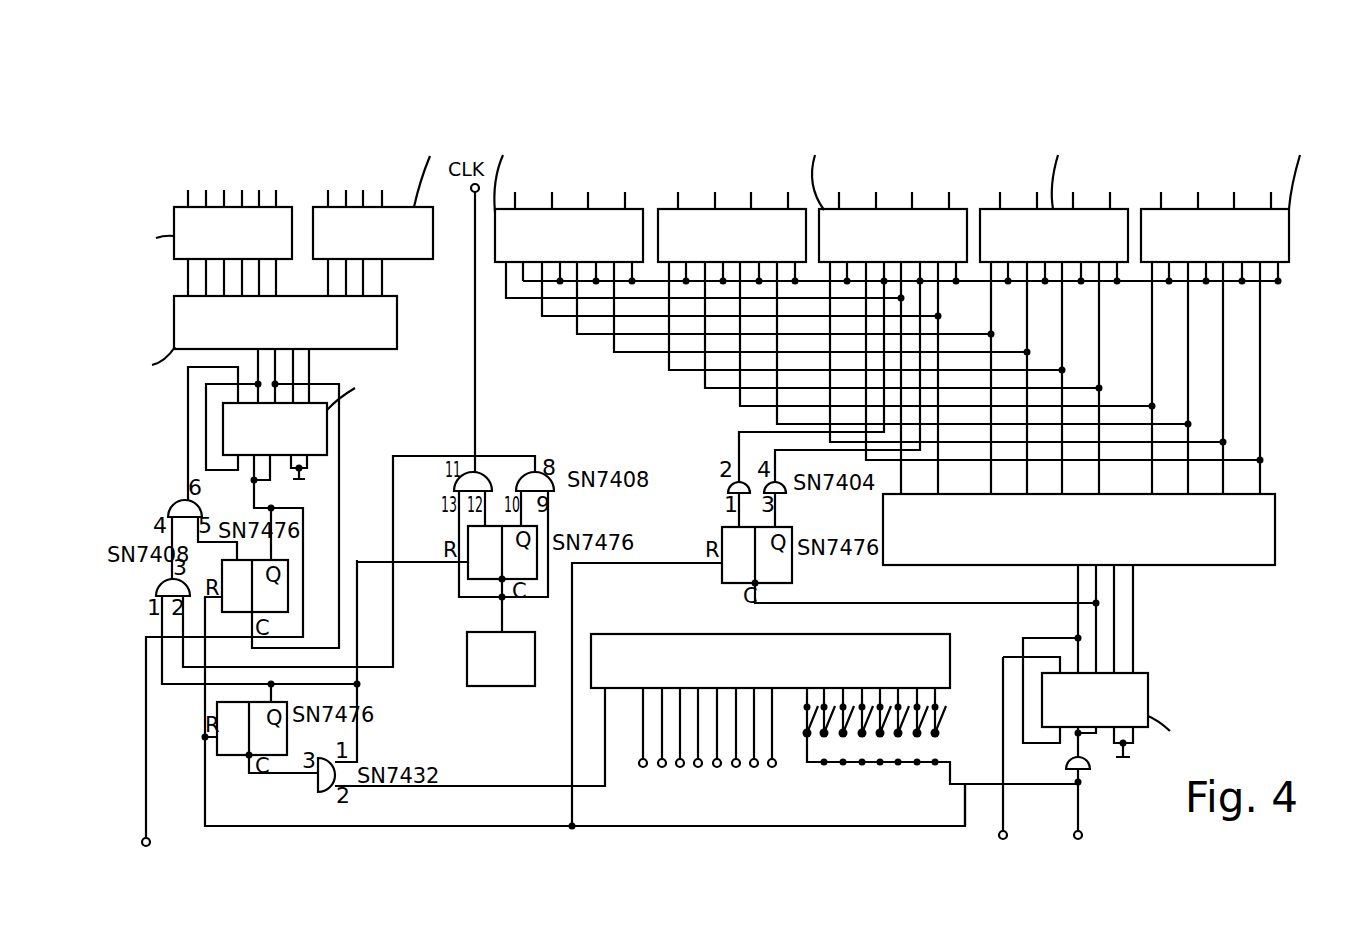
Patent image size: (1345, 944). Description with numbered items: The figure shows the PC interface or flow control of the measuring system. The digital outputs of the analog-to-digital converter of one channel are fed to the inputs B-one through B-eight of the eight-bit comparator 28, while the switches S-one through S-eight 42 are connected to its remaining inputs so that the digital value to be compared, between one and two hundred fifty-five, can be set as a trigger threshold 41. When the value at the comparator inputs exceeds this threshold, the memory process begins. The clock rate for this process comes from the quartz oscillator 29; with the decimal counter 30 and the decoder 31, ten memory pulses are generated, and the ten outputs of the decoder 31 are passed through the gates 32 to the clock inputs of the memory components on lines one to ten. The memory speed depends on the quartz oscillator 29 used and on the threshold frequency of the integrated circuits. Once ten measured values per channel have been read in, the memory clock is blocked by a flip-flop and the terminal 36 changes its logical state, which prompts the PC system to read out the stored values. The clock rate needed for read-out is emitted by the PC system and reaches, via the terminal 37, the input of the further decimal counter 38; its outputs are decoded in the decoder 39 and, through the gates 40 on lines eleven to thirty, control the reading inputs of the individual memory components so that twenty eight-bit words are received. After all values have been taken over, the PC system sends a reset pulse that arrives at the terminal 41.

The 8-bit comparator 28 is at (732, 652).
The quartz oscillator 29 is at (490, 700).
The decimal counter 30 is at (320, 426).
The decoder 31 is at (388, 338).
The gates 32 is at (289, 207).
The terminal 36 is at (161, 847).
The terminal 37 is at (1017, 843).
The further decimal counter 38 is at (1148, 690).
The decoder 39 is at (1183, 549).
The gates 40 is at (662, 211).
The trigger threshold 41 is at (1090, 843).
The switches S1-S8 42 is at (866, 748).